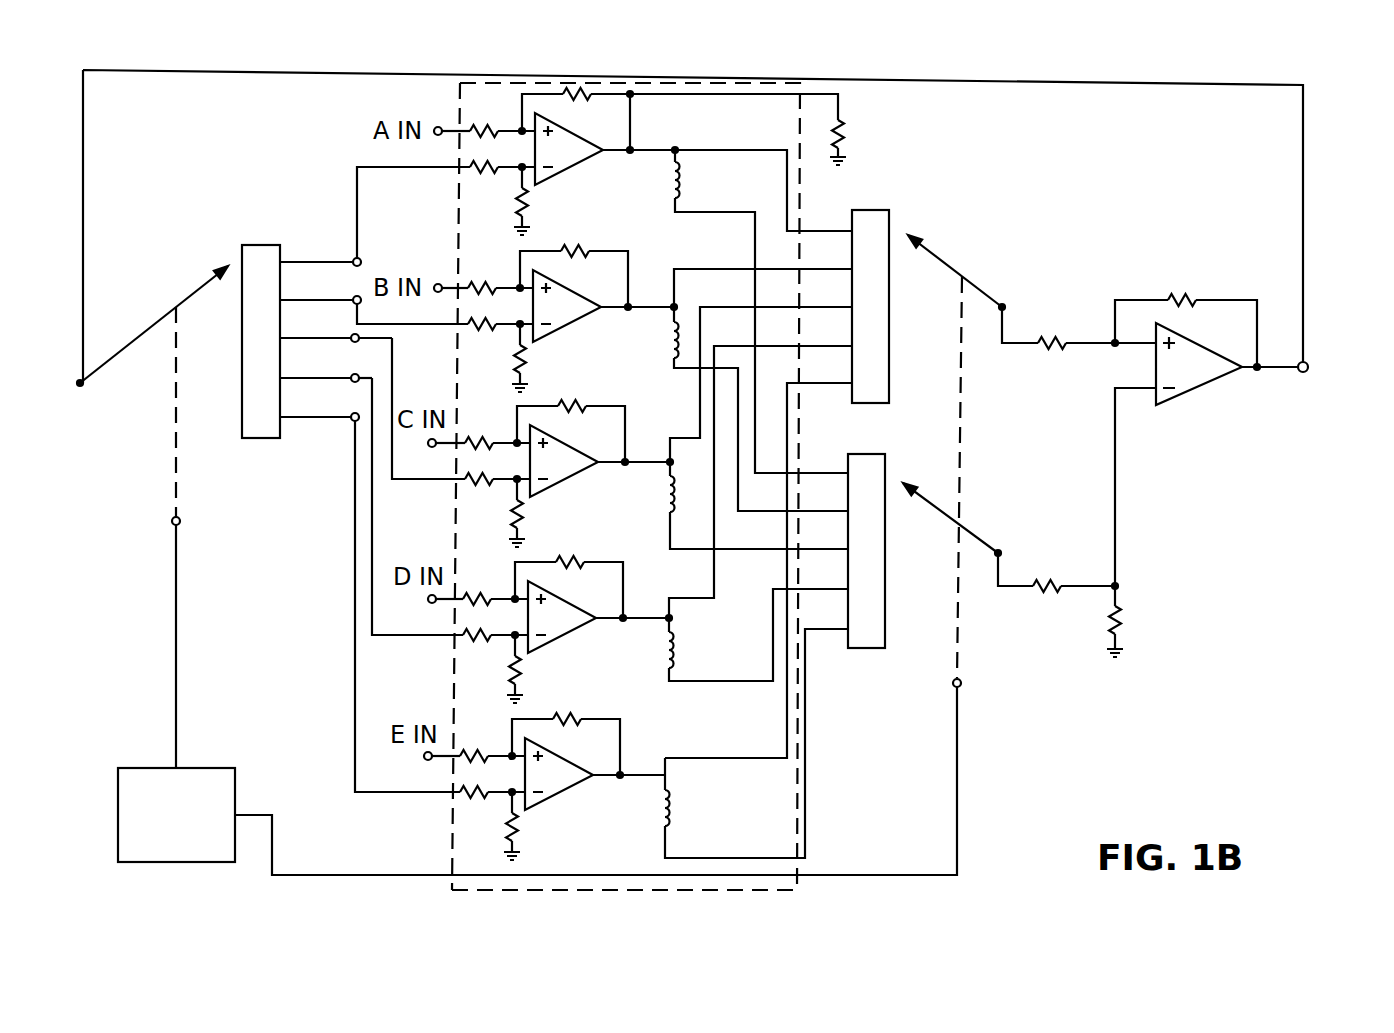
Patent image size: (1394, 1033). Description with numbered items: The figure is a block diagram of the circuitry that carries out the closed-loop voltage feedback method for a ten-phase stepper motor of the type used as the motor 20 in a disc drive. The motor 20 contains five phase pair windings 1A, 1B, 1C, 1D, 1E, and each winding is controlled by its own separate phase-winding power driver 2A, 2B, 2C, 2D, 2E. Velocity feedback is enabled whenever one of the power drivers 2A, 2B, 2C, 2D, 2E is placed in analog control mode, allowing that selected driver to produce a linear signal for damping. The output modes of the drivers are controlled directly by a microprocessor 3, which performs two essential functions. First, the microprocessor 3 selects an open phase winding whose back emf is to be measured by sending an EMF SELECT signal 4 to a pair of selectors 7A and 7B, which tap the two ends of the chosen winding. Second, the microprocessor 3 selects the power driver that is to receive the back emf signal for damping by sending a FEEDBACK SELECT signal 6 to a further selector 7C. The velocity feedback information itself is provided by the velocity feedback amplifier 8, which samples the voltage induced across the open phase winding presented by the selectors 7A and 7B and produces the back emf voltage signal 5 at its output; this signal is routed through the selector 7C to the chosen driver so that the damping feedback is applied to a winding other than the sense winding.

The phase pair winding 1A is at (748, 310).
The phase pair winding 1B is at (747, 390).
The phase pair winding 1C is at (744, 428).
The phase pair winding 1D is at (744, 513).
The phase pair winding 1E is at (742, 620).
The phase-winding power driver 2A is at (516, 173).
The phase-winding power driver 2B is at (515, 318).
The phase-winding power driver 2C is at (531, 442).
The phase-winding power driver 2D is at (520, 540).
The phase-winding power driver 2E is at (510, 640).
The microprocessor 3 is at (158, 767).
The EMF SELECT signal 4 is at (966, 645).
The back emf voltage signal 5 is at (1309, 361).
The FEEDBACK SELECT signal 6 is at (183, 537).
The selector 7A is at (889, 303).
The selector 7B is at (885, 577).
The selector 7C is at (240, 398).
The velocity feedback amplifier 8 is at (1187, 393).
The motor 20 is at (797, 785).